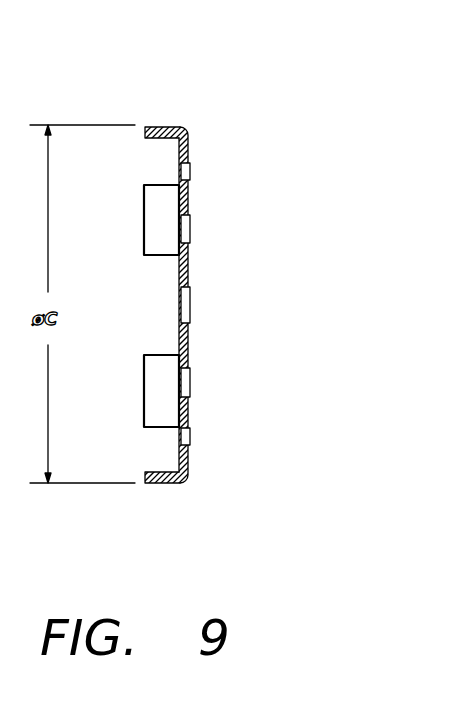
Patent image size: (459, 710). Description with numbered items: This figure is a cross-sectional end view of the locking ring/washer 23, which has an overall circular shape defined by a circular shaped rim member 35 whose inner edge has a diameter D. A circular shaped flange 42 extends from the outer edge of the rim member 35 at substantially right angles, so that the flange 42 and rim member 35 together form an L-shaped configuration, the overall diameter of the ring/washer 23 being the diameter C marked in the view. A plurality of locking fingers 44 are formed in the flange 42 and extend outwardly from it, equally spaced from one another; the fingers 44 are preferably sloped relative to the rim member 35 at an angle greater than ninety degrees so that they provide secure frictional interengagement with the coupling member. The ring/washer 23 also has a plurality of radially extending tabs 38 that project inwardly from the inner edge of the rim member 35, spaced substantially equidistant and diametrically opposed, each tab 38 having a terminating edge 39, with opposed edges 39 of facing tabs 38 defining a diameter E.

The ring/washer 23 is at (183, 484).
The rim member 35 is at (184, 129).
The radially extending tab 38 is at (190, 174).
The terminating edge 39 is at (190, 303).
The flange 42 is at (163, 220).
The locking finger 44 is at (158, 127).